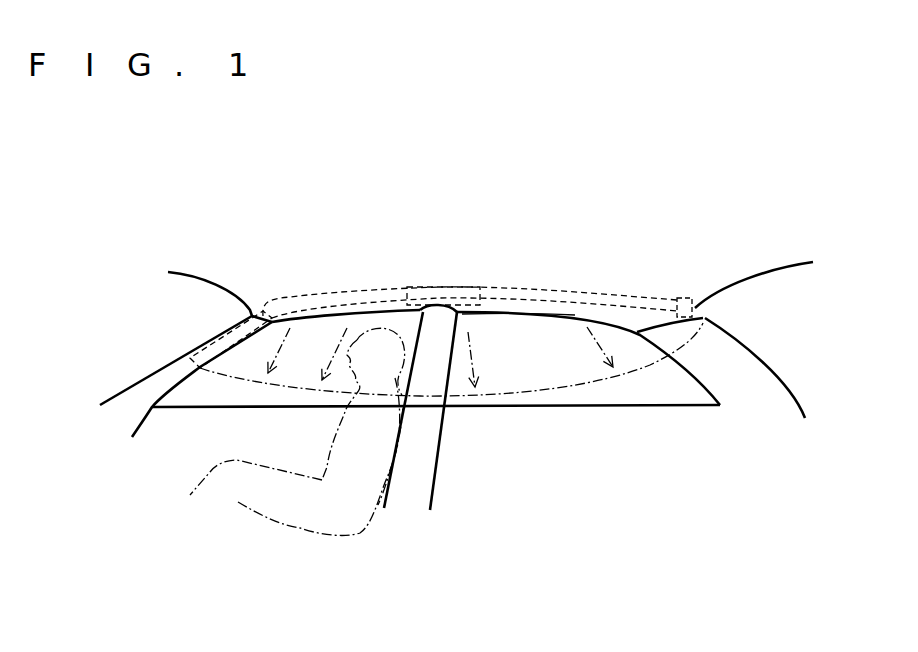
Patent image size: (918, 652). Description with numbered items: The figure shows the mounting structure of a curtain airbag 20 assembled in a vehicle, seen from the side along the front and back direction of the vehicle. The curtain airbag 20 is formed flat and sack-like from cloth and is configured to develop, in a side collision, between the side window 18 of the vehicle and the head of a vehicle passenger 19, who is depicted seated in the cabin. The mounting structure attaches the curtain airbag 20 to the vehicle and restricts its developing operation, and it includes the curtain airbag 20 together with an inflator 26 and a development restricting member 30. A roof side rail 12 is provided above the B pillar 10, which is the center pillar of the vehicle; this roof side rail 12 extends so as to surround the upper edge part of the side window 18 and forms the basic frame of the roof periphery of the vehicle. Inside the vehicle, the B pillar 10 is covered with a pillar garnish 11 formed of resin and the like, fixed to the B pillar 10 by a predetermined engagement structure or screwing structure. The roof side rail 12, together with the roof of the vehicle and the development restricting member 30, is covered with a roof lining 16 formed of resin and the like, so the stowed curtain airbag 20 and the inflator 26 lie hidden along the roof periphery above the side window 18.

The B pillar 10 is at (457, 347).
The pillar garnish 11 is at (433, 373).
The roof side rail 12 is at (483, 318).
The roof lining 16 is at (392, 285).
The side window 18 is at (312, 330).
The vehicle passenger 19 is at (300, 530).
The curtain airbag 20 is at (642, 297).
The inflator 26 is at (683, 297).
The development restricting member 30 is at (440, 285).